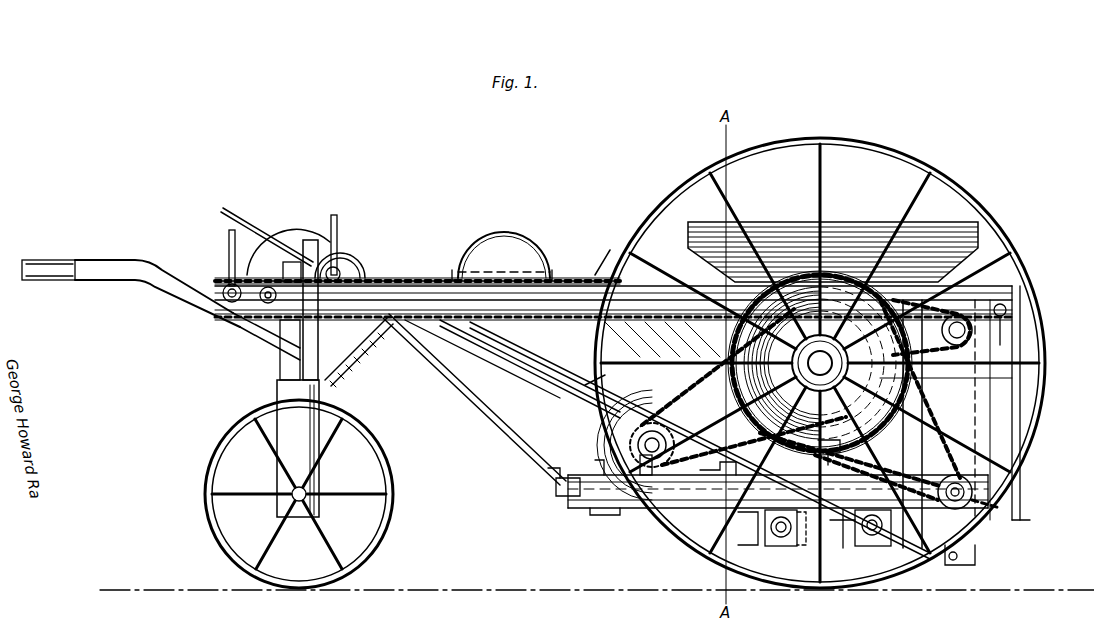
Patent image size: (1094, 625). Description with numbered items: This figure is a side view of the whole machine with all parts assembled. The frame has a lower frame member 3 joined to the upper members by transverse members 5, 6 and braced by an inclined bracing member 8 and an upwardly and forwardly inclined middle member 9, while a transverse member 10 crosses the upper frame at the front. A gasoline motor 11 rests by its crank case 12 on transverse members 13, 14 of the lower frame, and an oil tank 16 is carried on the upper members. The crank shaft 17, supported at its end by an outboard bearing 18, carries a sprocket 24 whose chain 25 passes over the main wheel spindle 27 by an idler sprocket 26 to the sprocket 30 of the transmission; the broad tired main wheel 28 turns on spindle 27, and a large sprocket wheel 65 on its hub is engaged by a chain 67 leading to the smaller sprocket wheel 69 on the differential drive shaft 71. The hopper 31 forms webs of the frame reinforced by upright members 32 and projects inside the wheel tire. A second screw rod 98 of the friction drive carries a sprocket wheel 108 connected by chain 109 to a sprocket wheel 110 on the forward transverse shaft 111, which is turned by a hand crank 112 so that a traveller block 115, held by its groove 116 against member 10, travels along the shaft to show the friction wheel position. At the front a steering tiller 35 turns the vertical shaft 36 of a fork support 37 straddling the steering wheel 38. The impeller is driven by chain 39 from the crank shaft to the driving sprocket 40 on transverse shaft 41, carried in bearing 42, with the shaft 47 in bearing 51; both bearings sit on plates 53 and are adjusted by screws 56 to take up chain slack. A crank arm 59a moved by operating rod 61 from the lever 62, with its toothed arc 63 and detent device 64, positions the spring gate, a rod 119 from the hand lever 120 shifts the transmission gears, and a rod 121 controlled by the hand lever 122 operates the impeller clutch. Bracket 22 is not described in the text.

The lower frame member 3 is at (660, 495).
The transverse member 5 is at (452, 270).
The transverse member 6 is at (1005, 288).
The bracing member 8 is at (348, 372).
The middle member 9 is at (490, 425).
The transverse member 10 is at (312, 240).
The gasoline motor 11 is at (600, 400).
The crank case 12 is at (630, 440).
The transverse member 13 is at (556, 483).
The transverse member 14 is at (722, 480).
The oil tank 16 is at (518, 250).
The crank shaft 17 is at (640, 410).
The outboard bearing 18 is at (635, 480).
The lower frame beam 22 is at (612, 497).
The sprocket 24 is at (650, 350).
The chain 25 is at (700, 405).
The idler sprocket 26 is at (850, 350).
The main wheel spindle 27 is at (810, 372).
The main wheel 28 is at (960, 192).
The sprocket 30 is at (975, 330).
The hopper 31 is at (862, 225).
The upright member 32 is at (836, 440).
The steering tiller 35 is at (95, 280).
The vertical revoluble shaft 36 is at (270, 345).
The fork support 37 is at (305, 428).
The steering wheel 38 is at (232, 438).
The chain 39 is at (752, 530).
The driving sprocket 40 is at (803, 546).
The transverse shaft 41 is at (781, 538).
The bearing 42 is at (780, 545).
The shaft 47 is at (872, 538).
The bearing 51 is at (945, 560).
The plate 53 is at (843, 538).
The screw 56 is at (842, 521).
The crank arm 59a is at (850, 466).
The operating rod 61 is at (566, 368).
The lever 62 is at (340, 240).
The toothed arc 63 is at (360, 262).
The detent device 64 is at (337, 228).
The large sprocket wheel 65 is at (798, 280).
The chain 67 is at (936, 370).
The sprocket wheel 69 is at (972, 492).
The differential drive shaft 71 is at (985, 505).
The screw rod 98 is at (1005, 320).
The sprocket wheel 108 is at (1006, 311).
The chain 109 is at (500, 342).
The sprocket wheel 110 is at (245, 338).
The transverse shaft 111 is at (238, 326).
The hand crank 112 is at (222, 313).
The traveller block 115 is at (262, 262).
The groove 116 is at (262, 272).
The rod 119 is at (572, 300).
The hand lever 120 is at (229, 258).
The rod 121 is at (522, 362).
The hand lever 122 is at (232, 210).